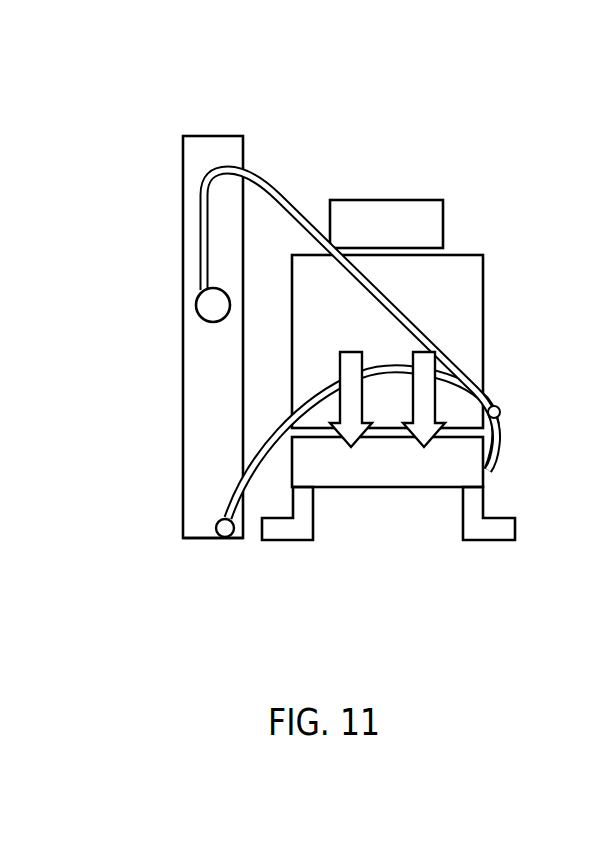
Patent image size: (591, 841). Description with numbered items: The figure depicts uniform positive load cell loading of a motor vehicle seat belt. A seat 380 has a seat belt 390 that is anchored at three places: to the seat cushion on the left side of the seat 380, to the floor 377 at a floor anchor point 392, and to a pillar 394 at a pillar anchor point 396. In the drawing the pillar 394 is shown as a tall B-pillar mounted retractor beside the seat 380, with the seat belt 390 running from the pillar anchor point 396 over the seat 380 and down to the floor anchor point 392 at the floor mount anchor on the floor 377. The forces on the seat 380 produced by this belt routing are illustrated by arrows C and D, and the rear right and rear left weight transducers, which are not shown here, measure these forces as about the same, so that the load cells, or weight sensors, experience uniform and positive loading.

The pillar 394 is at (195, 153).
The pillar anchor point 396 is at (198, 310).
The floor 377 is at (198, 540).
The floor anchor point 392 is at (223, 542).
The seat belt 390 is at (295, 203).
The seat 380 is at (455, 247).
The force arrow C is at (428, 367).
The force arrow D is at (352, 399).